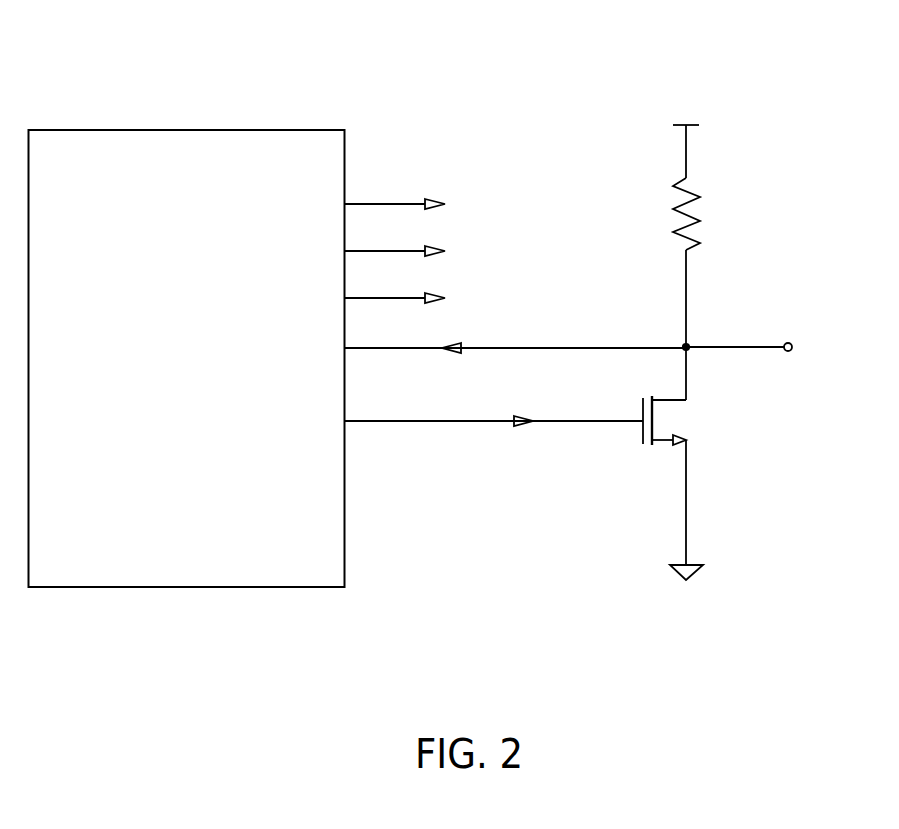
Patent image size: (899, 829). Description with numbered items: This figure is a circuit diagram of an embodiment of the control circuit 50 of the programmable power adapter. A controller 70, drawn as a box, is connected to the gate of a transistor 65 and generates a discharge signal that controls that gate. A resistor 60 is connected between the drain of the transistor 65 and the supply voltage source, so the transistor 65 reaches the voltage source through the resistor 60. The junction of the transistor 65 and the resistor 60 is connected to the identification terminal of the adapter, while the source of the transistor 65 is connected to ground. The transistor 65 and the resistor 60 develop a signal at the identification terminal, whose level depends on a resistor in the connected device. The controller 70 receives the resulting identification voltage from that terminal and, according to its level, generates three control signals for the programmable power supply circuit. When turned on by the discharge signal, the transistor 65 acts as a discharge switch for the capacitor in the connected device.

The control circuit 50 is at (885, 43).
The controller 70 is at (187, 341).
The resistor 60 is at (666, 214).
The transistor 65 is at (681, 420).